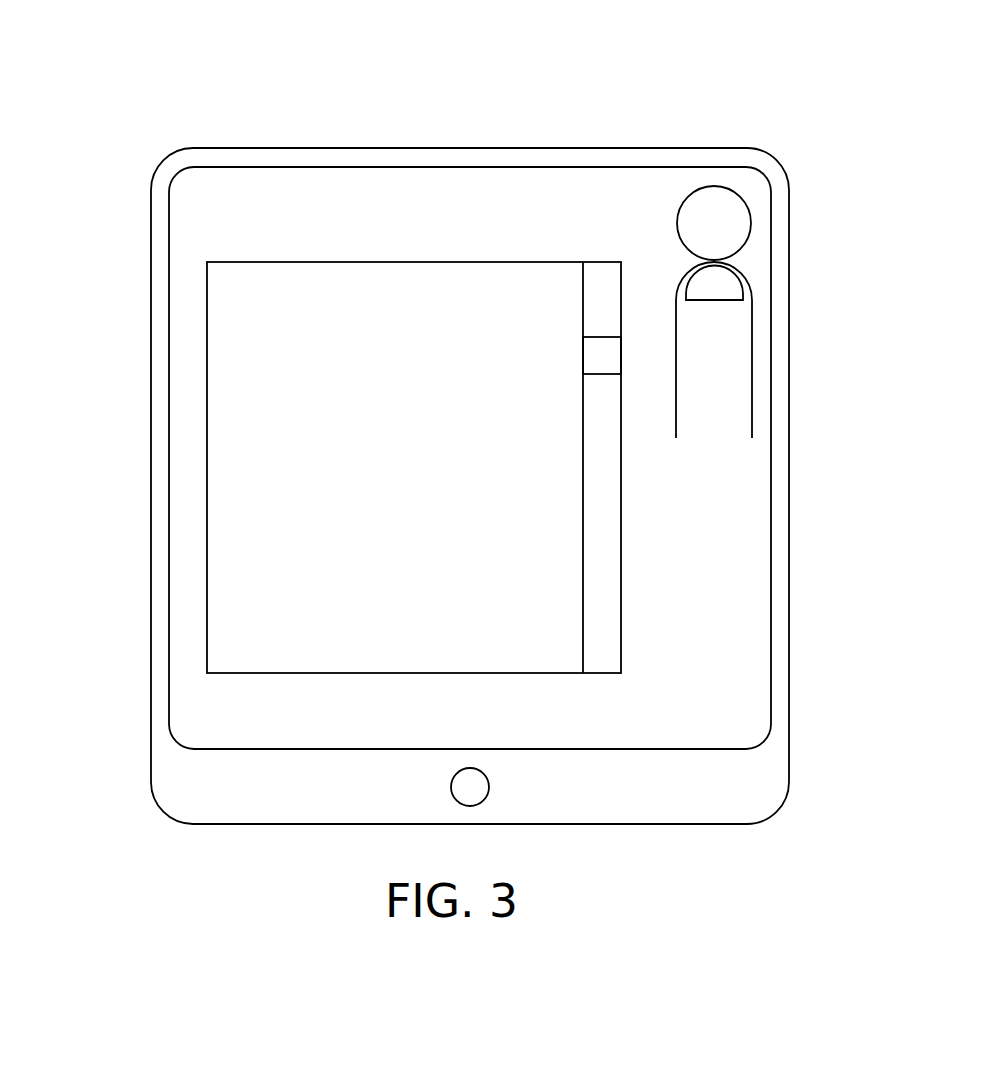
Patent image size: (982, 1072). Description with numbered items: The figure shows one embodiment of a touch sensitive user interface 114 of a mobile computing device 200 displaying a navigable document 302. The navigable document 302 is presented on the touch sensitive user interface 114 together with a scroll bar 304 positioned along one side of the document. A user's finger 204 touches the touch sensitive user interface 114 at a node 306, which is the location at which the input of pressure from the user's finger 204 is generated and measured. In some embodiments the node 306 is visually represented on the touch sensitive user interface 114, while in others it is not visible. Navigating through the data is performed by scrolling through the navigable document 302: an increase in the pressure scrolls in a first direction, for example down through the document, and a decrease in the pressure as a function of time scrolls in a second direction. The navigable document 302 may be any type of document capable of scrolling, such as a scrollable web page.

The electronic device 200 is at (302, 148).
The touch-sensitive display 114 is at (377, 205).
The text content region 302 is at (207, 298).
The scroll bar 304 is at (622, 352).
The touch contact point 306 is at (737, 190).
The user finger 204 is at (745, 275).